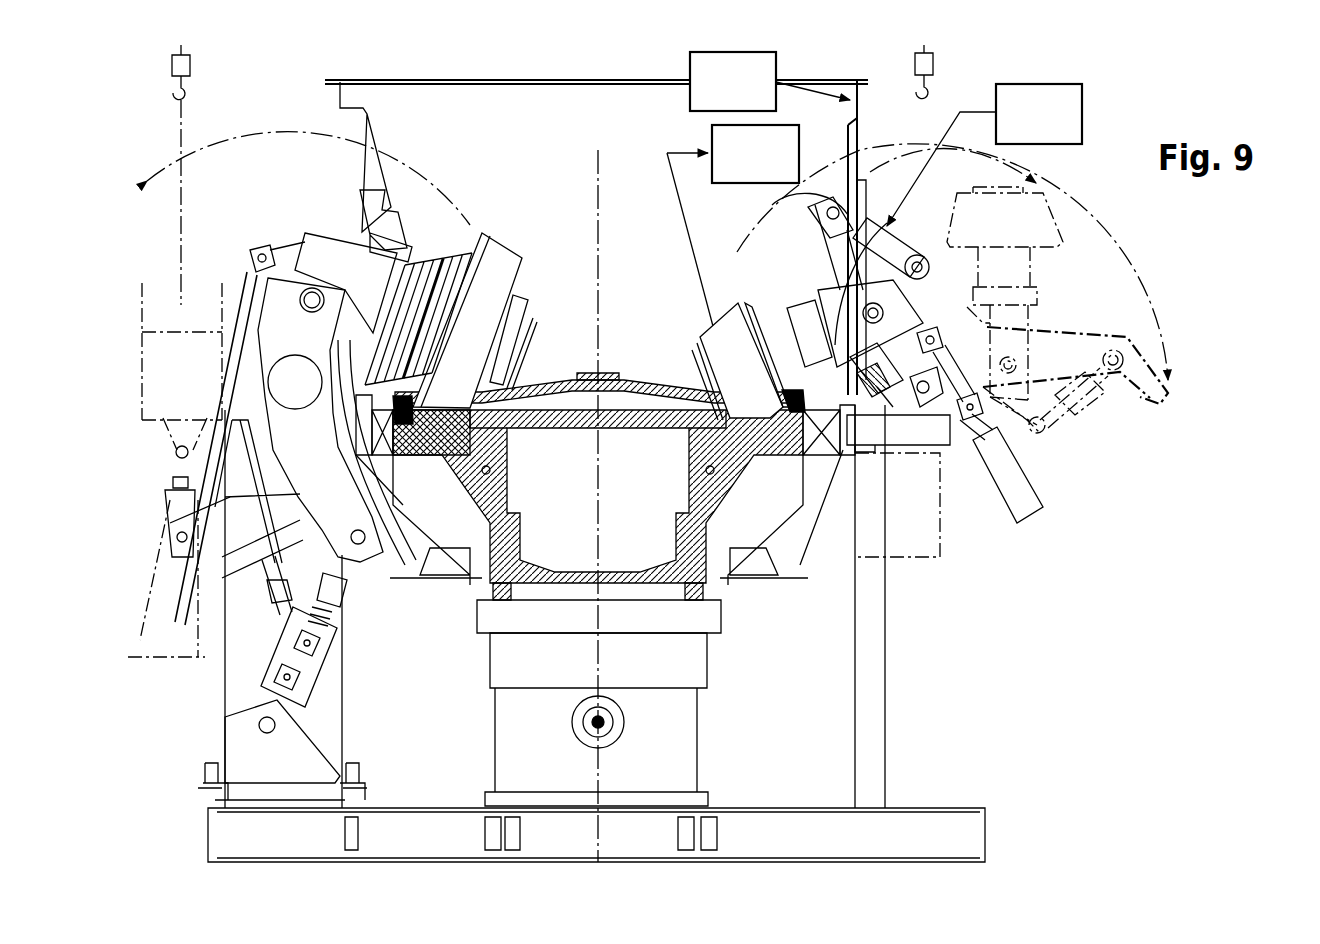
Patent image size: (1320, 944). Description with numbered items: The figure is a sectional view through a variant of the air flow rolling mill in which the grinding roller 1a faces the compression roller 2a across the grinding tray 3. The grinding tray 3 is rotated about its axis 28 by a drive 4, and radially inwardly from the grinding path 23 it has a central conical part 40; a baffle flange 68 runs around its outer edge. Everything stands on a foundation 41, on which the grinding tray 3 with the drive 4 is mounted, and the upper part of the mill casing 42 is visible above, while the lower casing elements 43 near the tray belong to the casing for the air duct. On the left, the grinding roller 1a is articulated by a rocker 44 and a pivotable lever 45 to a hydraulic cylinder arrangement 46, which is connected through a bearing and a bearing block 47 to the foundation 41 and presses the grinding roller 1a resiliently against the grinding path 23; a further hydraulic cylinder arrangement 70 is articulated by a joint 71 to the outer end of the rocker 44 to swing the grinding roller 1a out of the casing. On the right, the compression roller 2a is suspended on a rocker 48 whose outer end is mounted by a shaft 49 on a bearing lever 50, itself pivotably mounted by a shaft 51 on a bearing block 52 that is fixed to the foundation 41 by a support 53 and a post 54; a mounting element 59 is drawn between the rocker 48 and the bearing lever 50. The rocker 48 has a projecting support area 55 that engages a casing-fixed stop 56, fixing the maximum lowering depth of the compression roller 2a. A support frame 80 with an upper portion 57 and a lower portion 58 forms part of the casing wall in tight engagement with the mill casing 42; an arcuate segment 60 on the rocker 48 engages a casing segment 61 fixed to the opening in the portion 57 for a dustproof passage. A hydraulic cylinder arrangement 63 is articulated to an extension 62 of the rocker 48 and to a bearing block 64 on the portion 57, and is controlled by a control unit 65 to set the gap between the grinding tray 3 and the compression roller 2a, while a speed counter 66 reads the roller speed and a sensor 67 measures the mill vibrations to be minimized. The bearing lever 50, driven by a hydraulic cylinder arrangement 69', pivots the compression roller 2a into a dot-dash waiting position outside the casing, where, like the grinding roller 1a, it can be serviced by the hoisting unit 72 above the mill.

The hoisting unit 72 is at (172, 63).
The mill casing 42 is at (338, 98).
The sensor 67 is at (770, 81).
The speed counter 66 is at (733, 227).
The control unit 65 is at (984, 155).
The axis 28 is at (596, 158).
The rocker 44 is at (322, 247).
The joint 71 is at (258, 252).
The grinding roller 1a is at (500, 262).
The compression roller 2a is at (705, 330).
The lower portion 58 is at (762, 308).
The rocker 48 is at (800, 317).
The casing segment 61 is at (832, 285).
The upper portion 57 is at (778, 202).
The bearing block 64 is at (822, 225).
The support frame 80 is at (862, 165).
The arcuate segment 60 is at (860, 212).
The hydraulic cylinder arrangement 63 is at (885, 245).
The extension 62 is at (928, 268).
The shaft 49 is at (890, 306).
The baffle flange 68 is at (950, 344).
The pivot block 59 is at (868, 370).
The shaft 51 is at (945, 367).
The support 53 is at (948, 430).
The hydraulic cylinder arrangement 69' is at (1016, 484).
The bearing lever 50 is at (925, 445).
The bearing block 52 is at (897, 505).
The support area 55 is at (832, 440).
The stop 56 is at (845, 455).
The conical part 40 is at (596, 380).
The grinding path 23 is at (440, 455).
The grinding tray 3 is at (714, 588).
The bracket 43 is at (398, 578).
The hydraulic cylinder arrangement 70 is at (200, 472).
The pivotable lever 45 is at (297, 495).
The hydraulic cylinder arrangement 46 is at (270, 670).
The bearing block 47 is at (248, 748).
The drive 4 is at (683, 737).
The post 54 is at (885, 735).
The foundation 41 is at (960, 808).